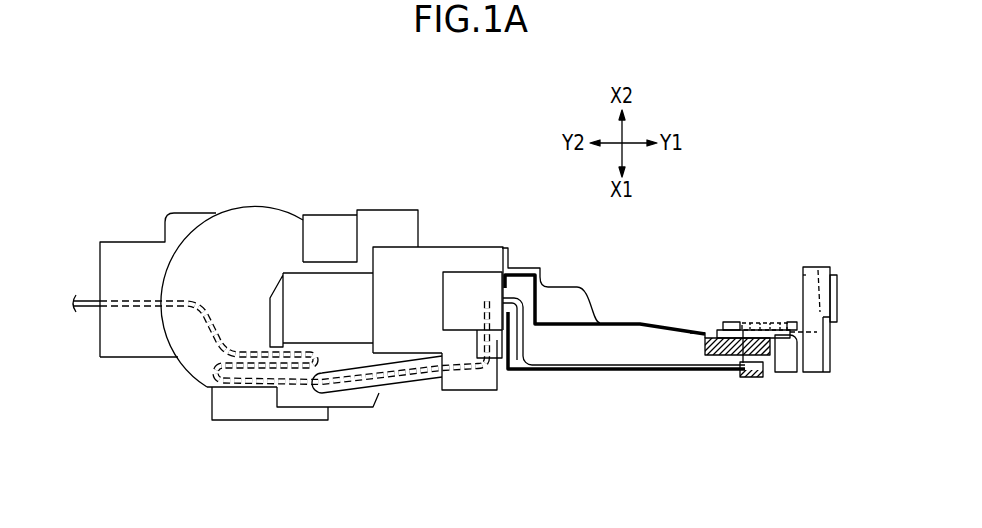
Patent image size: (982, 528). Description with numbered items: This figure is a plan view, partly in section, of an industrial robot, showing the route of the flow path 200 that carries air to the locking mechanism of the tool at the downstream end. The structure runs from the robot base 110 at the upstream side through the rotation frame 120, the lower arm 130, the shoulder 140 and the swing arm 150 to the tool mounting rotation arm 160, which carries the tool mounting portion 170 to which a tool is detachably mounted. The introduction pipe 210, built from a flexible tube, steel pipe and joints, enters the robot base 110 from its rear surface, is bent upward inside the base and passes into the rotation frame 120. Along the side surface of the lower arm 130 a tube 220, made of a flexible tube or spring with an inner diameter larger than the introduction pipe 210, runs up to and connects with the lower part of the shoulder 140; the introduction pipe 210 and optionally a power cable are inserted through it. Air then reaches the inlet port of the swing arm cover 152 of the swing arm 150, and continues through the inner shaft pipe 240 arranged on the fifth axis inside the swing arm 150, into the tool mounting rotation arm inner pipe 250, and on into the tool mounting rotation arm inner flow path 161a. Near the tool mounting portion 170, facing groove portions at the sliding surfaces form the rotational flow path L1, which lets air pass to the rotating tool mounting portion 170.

The robot base 110 is at (135, 252).
The rotation frame 120 is at (296, 421).
The lower arm 130 is at (352, 408).
The shoulder 140 is at (457, 247).
The swing arm 150 is at (628, 323).
The swing arm cover 152 is at (614, 371).
The tool mounting rotation arm 160 is at (733, 322).
The tool mounting rotation arm inner flow path 161a is at (820, 332).
The tool mounting portion 170 is at (838, 272).
The flow path 200 is at (90, 311).
The introduction pipe 210 is at (483, 358).
The tube 220 is at (415, 374).
The inner shaft pipe 240 is at (740, 377).
The tool mounting rotation arm inner pipe 250 is at (765, 318).
The rotational flow path L1 is at (805, 275).